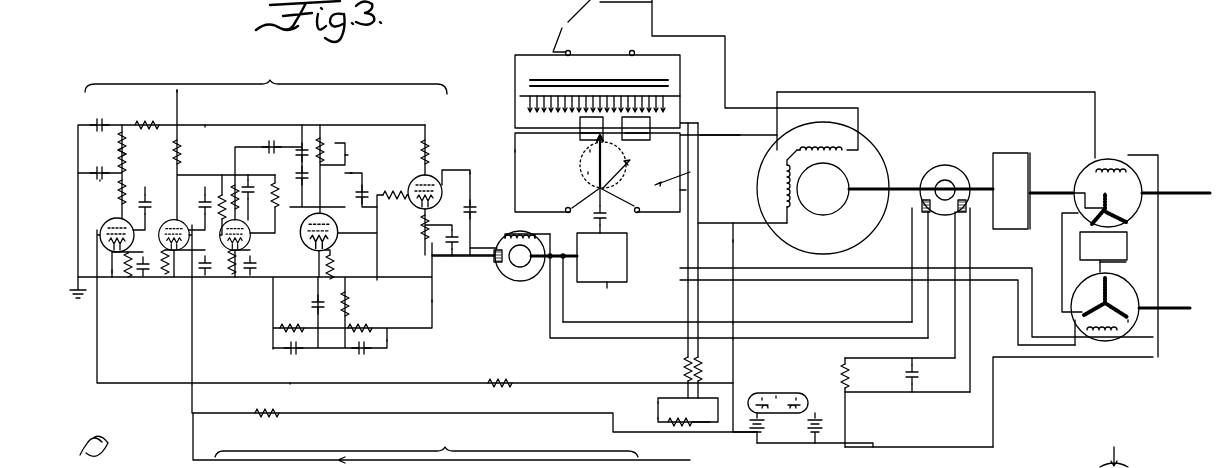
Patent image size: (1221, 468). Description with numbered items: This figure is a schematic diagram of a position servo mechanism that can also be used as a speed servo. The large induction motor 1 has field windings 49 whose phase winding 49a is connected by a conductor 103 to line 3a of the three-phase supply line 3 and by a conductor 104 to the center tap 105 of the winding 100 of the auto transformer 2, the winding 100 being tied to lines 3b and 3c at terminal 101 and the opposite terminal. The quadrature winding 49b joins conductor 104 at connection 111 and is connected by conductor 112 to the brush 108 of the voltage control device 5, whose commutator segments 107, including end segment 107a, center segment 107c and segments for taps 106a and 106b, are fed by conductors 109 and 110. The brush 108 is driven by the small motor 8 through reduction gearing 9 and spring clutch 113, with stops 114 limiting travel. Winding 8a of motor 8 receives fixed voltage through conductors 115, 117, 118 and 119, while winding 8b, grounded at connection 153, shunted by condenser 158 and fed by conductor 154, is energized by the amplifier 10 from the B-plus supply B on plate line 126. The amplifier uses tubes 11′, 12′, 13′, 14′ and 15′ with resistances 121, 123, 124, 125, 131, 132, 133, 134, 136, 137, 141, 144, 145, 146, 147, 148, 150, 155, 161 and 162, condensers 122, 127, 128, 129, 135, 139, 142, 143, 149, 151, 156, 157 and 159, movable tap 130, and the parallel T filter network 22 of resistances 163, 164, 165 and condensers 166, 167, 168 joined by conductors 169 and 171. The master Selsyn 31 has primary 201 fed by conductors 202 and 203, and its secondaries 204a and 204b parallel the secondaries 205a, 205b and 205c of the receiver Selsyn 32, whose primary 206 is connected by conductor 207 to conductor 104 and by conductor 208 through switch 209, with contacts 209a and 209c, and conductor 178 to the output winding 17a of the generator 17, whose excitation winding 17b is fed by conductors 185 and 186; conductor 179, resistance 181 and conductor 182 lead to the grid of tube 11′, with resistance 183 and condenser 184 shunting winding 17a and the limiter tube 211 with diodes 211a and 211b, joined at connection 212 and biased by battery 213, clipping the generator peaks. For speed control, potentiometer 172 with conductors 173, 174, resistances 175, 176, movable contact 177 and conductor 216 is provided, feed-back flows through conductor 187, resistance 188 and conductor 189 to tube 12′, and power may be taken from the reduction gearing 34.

The large induction motor 1 is at (887, 152).
The transformer 2 is at (538, 76).
The three-phase power supply line 3 is at (560, 24).
The line 3a is at (623, 12).
The line 3b is at (578, 51).
The line 3c is at (621, 55).
The voltage control device 5 is at (687, 172).
The small induction motor 8 is at (520, 280).
The phase winding 8a is at (502, 234).
The quadrature winding 8b is at (525, 270).
The reduction gearing 9 is at (607, 288).
The voltage amplifier 10 is at (280, 256).
The input tube 11′ is at (106, 216).
The tube 12′ is at (177, 242).
The third stage amplifier tube 13′ is at (245, 246).
The tube 14′ is at (338, 238).
The tube 15′ is at (432, 198).
The generator 17 is at (944, 165).
The output winding 17a is at (963, 218).
The excitation winding 17b is at (918, 210).
The parallel T filter network 22 is at (400, 344).
The transmitter or master Selsyn 31 is at (1138, 338).
The receiver Selsyn 32 is at (1074, 168).
The reduction gearing 34 is at (1006, 152).
The field windings 49 is at (823, 116).
The phase winding 49a is at (846, 142).
The quadrature phase winding 49b is at (786, 180).
The winding 100 is at (524, 100).
The terminal 101 is at (518, 96).
The conductor 103 is at (794, 100).
The conductor 104 is at (728, 136).
The center tap 105 is at (578, 123).
The tap 106a is at (578, 138).
The tap 106b is at (646, 141).
The commutator segments 107 is at (580, 161).
The end segment 107a is at (574, 176).
The center segment 107c is at (576, 160).
The brush 108 is at (636, 172).
The conductor 109 is at (511, 202).
The conductor 110 is at (686, 190).
The connection 111 is at (773, 134).
The conductor 112 is at (706, 221).
The spring clutch 113 is at (579, 257).
The stops 114 is at (603, 184).
The conductor 115 is at (562, 298).
The conductor 117 is at (730, 238).
The conductor 118 is at (550, 318).
The conductor 119 is at (668, 324).
The resistance 121 is at (110, 286).
The bypass condenser 122 is at (120, 295).
The load resistance 123 is at (134, 179).
The series resistance 124 is at (102, 170).
The series resistance 125 is at (144, 124).
The plate supply line 126 is at (205, 127).
The condenser 127 is at (89, 190).
The condenser 128 is at (90, 124).
The condenser 129 is at (144, 200).
The movable tap 130 is at (122, 242).
The resistance 131 is at (142, 278).
The resistance 132 is at (167, 278).
The load resistance 133 is at (187, 155).
The decoupling resistance 134 is at (136, 152).
The bypass condenser 135 is at (238, 225).
The resistance 136 is at (238, 273).
The load resistance 137 is at (222, 183).
The condenser 139 is at (215, 205).
The resistance 141 is at (198, 204).
The condenser 142 is at (206, 278).
The condenser 143 is at (250, 185).
The resistance 144 is at (264, 197).
The resistance 145 is at (303, 300).
The cathode resistance 146 is at (345, 267).
The load resistance 147 is at (360, 163).
The resistance 148 is at (325, 134).
The bypass condenser 149 is at (301, 125).
The voltage dropping resistance 150 is at (360, 145).
The bypass condenser 151 is at (344, 181).
The ground connection 153 is at (492, 272).
The conductor 154 is at (461, 195).
The load resistance 155 is at (428, 153).
The bypass condenser 156 is at (470, 170).
The condenser 157 is at (438, 243).
The condenser 158 is at (432, 264).
The condenser 159 is at (362, 205).
The resistance 161 is at (393, 205).
The resistance 162 is at (403, 227).
The resistance 163 is at (358, 304).
The resistance 164 is at (292, 318).
The resistance 165 is at (364, 322).
The condenser 166 is at (307, 344).
The condenser 167 is at (261, 360).
The condenser 168 is at (355, 356).
The conductor 169 is at (433, 318).
The conductor 171 is at (269, 313).
The potentiometer 172 is at (660, 428).
The conductor 173 is at (688, 410).
The conductor 174 is at (656, 403).
The resistance 175 is at (698, 370).
The resistance 176 is at (679, 373).
The movable contact 177 is at (688, 428).
The conductor 178 is at (924, 392).
The conductor 179 is at (836, 358).
The resistance 181 is at (410, 377).
The conductor 182 is at (372, 379).
The resistance 183 is at (849, 370).
The condenser 184 is at (927, 375).
The conductor 185 is at (814, 322).
The conductor 186 is at (868, 322).
The conductor 187 is at (735, 298).
The series resistance 188 is at (270, 415).
The conductor 189 is at (195, 370).
The primary winding 201 is at (1098, 334).
The conductor 202 is at (856, 268).
The conductor 203 is at (851, 282).
The secondary winding 204a is at (1120, 300).
The secondary winding 204b is at (1082, 321).
The secondary winding 205a is at (1120, 215).
The secondary winding 205b is at (1129, 226).
The secondary winding 205c is at (1107, 200).
The primary 206 is at (1108, 164).
The conductor 207 is at (940, 92).
The conductor 208 is at (995, 398).
The switch 209 is at (856, 406).
The stationary contact 209a is at (1165, 297).
The movable contact 209c is at (1165, 255).
The tube 211 is at (770, 424).
The diode 211a is at (760, 394).
The diode 211b is at (798, 396).
The connection 212 is at (776, 396).
The battery 213 is at (756, 434).
The conductor 216 is at (746, 446).
The B-plus supply B is at (177, 92).